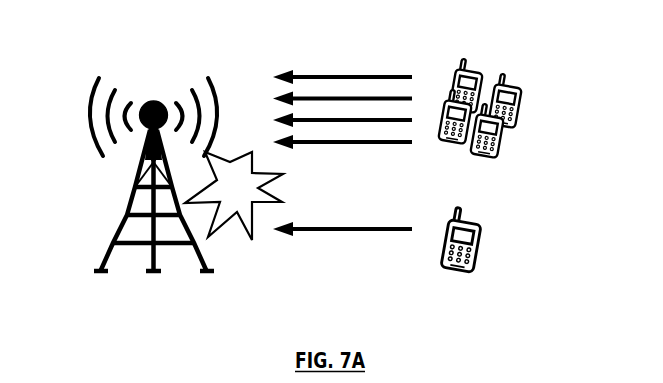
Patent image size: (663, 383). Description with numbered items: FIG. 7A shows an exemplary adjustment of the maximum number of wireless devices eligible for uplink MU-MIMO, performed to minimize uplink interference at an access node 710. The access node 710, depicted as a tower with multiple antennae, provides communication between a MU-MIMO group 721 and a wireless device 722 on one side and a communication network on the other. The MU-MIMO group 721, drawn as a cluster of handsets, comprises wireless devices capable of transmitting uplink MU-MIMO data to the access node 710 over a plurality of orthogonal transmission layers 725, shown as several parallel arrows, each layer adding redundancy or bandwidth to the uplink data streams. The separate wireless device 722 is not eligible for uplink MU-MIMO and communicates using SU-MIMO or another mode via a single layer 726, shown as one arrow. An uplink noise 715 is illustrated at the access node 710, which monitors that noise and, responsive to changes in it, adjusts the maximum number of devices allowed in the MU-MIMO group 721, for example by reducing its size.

The access node 710 is at (108, 252).
The uplink noise 715 is at (286, 178).
The MU-MIMO group 721 is at (537, 74).
The wireless device 722 is at (478, 231).
The orthogonal transmission layers 725 is at (326, 48).
The single layer 726 is at (326, 252).